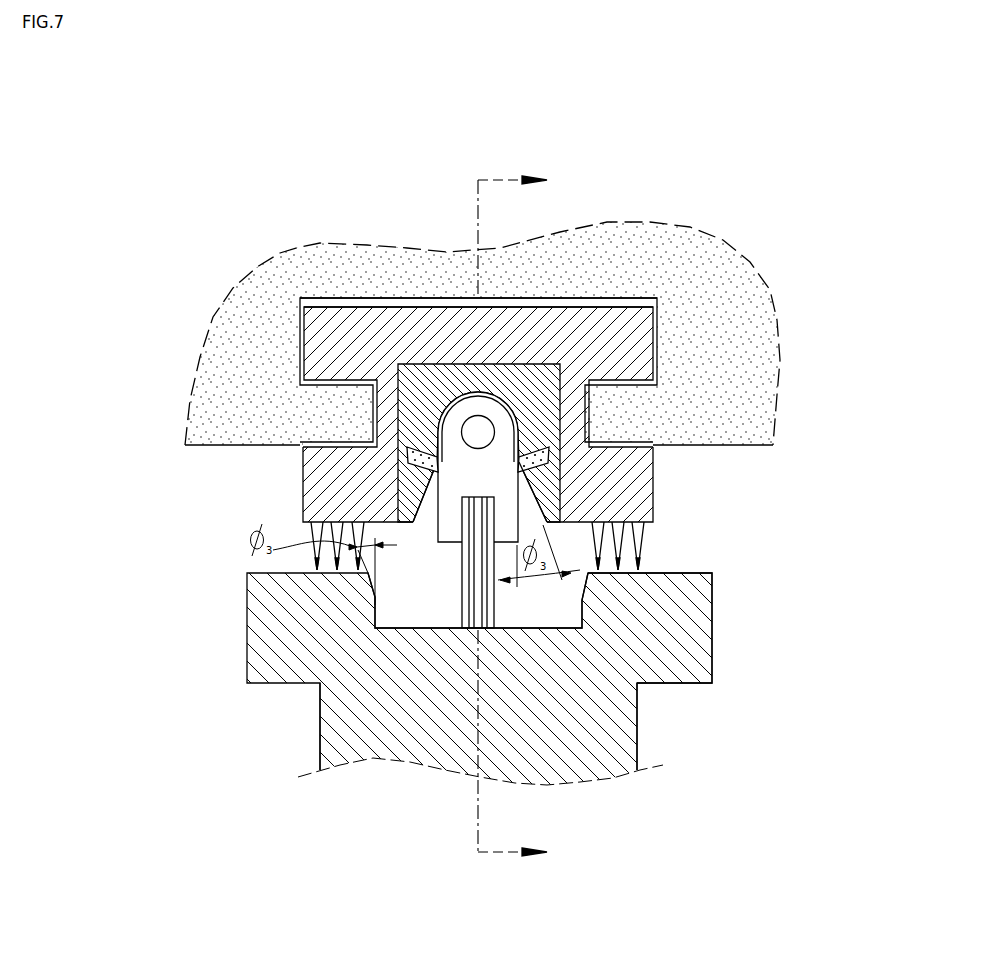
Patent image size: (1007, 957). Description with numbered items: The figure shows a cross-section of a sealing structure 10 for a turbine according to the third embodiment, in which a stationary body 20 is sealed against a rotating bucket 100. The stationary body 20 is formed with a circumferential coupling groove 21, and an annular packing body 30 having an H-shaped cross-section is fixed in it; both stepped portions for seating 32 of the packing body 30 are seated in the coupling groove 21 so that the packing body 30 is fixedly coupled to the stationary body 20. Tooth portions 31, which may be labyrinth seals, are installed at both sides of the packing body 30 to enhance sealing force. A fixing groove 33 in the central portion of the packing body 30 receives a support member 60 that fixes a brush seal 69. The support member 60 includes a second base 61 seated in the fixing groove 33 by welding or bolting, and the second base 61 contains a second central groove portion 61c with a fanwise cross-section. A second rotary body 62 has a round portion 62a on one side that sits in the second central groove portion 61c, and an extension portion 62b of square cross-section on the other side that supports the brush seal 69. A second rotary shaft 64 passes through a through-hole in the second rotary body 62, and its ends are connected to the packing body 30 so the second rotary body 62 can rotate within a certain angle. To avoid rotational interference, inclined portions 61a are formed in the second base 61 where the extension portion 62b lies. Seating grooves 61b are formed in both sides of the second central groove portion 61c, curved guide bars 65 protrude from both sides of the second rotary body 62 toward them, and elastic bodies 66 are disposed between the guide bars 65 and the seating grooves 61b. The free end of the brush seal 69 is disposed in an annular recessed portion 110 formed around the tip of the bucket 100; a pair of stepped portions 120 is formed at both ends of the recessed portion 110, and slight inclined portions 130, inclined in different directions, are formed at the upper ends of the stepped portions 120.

The sensor assembly 10 is at (365, 97).
The stationary body 20 is at (730, 307).
The coupling groove 21 is at (517, 303).
The packing body 30 is at (637, 353).
The tooth portion 31 is at (643, 543).
The stepped portions for seating 32 is at (637, 388).
The fixing groove 33 is at (358, 353).
The support member 60 is at (385, 413).
The second base 61 is at (415, 380).
The inclined portions 61a is at (403, 458).
The seating grooves 61b is at (405, 503).
The second central groove portion 61c is at (472, 428).
The second rotary body 62 is at (571, 303).
The round portion 62a is at (497, 413).
The extension portion 62b is at (507, 523).
The second rotary shaft 64 is at (450, 395).
The guide bars 65 is at (435, 480).
The elastic bodies 66 is at (450, 500).
The brush seal 69 is at (494, 593).
The bucket 100 is at (710, 662).
The recessed portion 110 is at (527, 632).
The stepped portions 120 is at (687, 643).
The slight inclined portions 130 is at (583, 597).